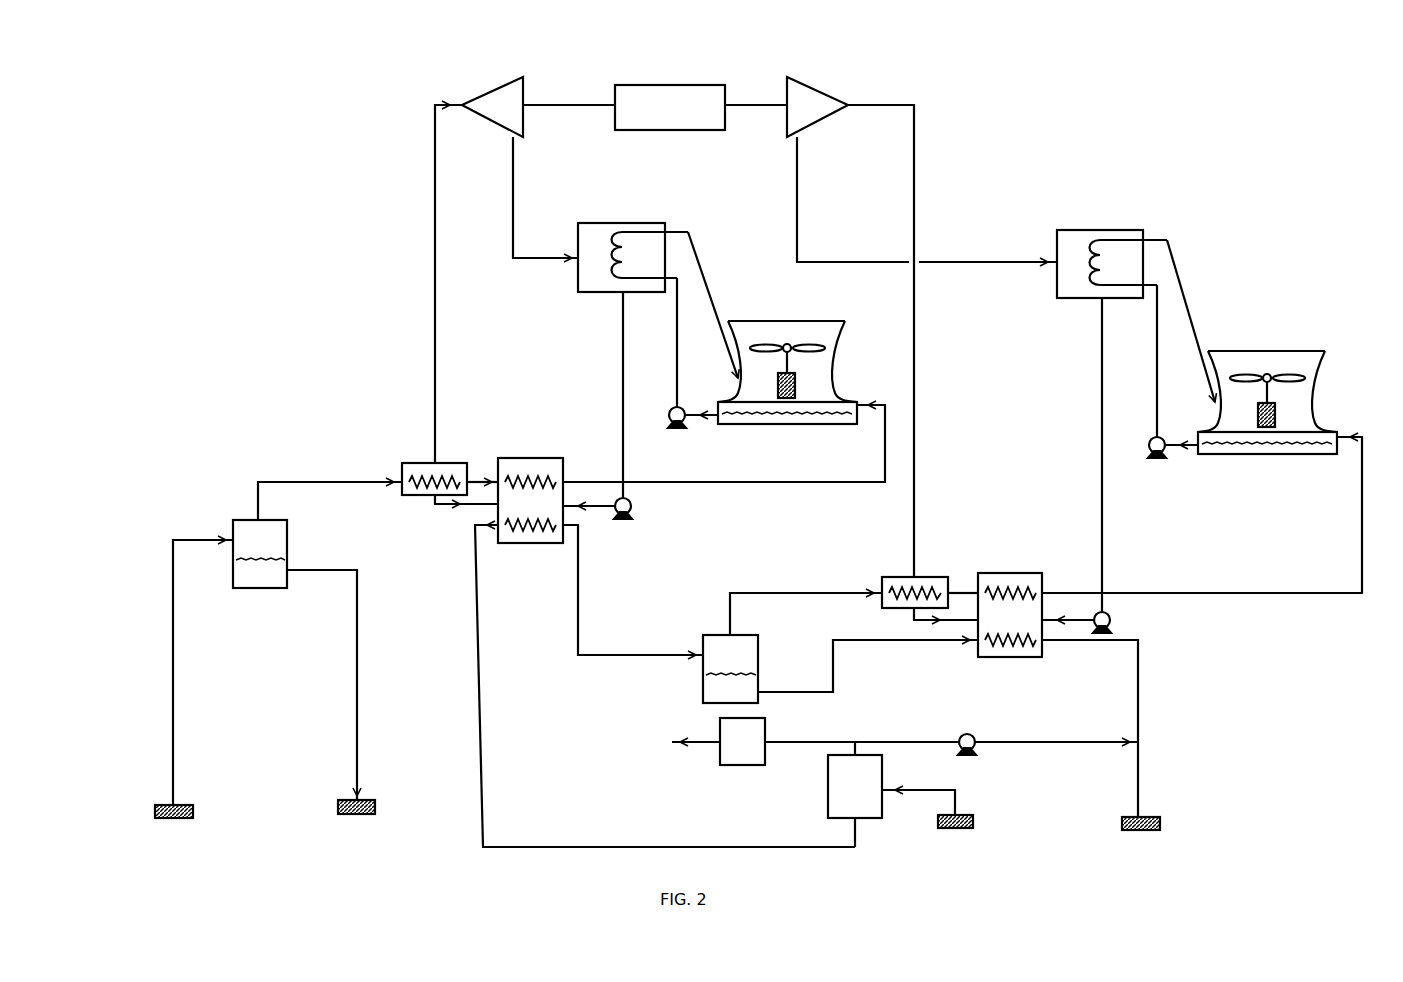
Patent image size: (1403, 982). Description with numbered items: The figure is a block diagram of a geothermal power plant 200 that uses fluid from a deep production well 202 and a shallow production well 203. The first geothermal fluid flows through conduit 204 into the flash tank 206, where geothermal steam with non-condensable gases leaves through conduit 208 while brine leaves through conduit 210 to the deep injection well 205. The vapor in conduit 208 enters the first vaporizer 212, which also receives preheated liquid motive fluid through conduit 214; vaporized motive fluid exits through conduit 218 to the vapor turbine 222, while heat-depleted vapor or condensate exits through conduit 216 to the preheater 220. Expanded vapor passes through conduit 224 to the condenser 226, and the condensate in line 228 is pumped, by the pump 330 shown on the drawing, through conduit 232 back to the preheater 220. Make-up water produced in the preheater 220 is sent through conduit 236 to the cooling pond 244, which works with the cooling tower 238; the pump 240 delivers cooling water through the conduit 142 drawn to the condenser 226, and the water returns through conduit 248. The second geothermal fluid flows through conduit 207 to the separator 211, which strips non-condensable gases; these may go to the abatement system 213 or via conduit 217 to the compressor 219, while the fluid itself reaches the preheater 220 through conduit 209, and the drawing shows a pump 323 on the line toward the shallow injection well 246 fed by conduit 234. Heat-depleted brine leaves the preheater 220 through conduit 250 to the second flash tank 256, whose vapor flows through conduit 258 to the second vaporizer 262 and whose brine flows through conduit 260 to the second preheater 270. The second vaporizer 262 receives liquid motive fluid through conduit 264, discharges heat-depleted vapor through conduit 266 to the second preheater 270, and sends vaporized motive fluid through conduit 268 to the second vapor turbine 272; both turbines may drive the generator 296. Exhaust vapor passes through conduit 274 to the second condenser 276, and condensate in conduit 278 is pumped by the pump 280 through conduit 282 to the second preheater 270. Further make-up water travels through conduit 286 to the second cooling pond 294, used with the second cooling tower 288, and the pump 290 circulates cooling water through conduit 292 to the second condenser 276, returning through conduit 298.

The power plant 200 is at (226, 78).
The deep production well 202 is at (180, 806).
The shallow production well 203 is at (962, 817).
The conduit 204 is at (174, 562).
The deep injection well 205 is at (366, 803).
The flash tank 206 is at (283, 588).
The conduit 207 is at (957, 790).
The conduit 208 is at (256, 508).
The conduit 209 is at (760, 847).
The conduit 210 is at (357, 590).
The separator 211 is at (883, 819).
The first vaporizer 212 is at (423, 497).
The abatement system 213 is at (765, 735).
The conduit 214 is at (462, 505).
The conduit 216 is at (472, 480).
The conduit 217 is at (845, 740).
The conduit 218 is at (437, 328).
The compressor 219 is at (962, 736).
The preheater 220 is at (537, 545).
The vapor turbine 222 is at (470, 97).
The conduit 224 is at (515, 256).
The condenser 226 is at (665, 225).
The conduit 228 is at (622, 362).
The conduit 232 is at (590, 508).
The conduit 234 is at (1140, 675).
The conduit 236 is at (738, 484).
The cooling tower 238 is at (838, 355).
The pump 240 is at (668, 414).
The cooling water line 142 is at (678, 352).
The cooling pond 244 is at (778, 425).
The shallow injection well 246 is at (1150, 818).
The conduit 248 is at (711, 292).
The conduit 250 is at (655, 657).
The second flash tank 256 is at (760, 703).
The conduit 258 is at (730, 618).
The conduit 260 is at (868, 641).
The second vaporizer 262 is at (884, 608).
The conduit 264 is at (943, 620).
The conduit 266 is at (950, 593).
The conduit 268 is at (915, 330).
The second preheater 270 is at (1013, 657).
The second vapor turbine 272 is at (832, 92).
The conduit 274 is at (830, 262).
The second condenser 276 is at (1143, 230).
The conduit 278 is at (1103, 350).
The pump 280 is at (1110, 618).
The conduit 282 is at (1059, 621).
The conduit 286 is at (1268, 598).
The second cooling tower 288 is at (1310, 378).
The pump 290 is at (1149, 443).
The conduit 292 is at (1157, 380).
The second cooling pond 294 is at (1255, 455).
The generator 296 is at (676, 85).
The conduit 298 is at (1188, 297).
The pump 323 is at (1022, 742).
The pump 330 is at (630, 504).